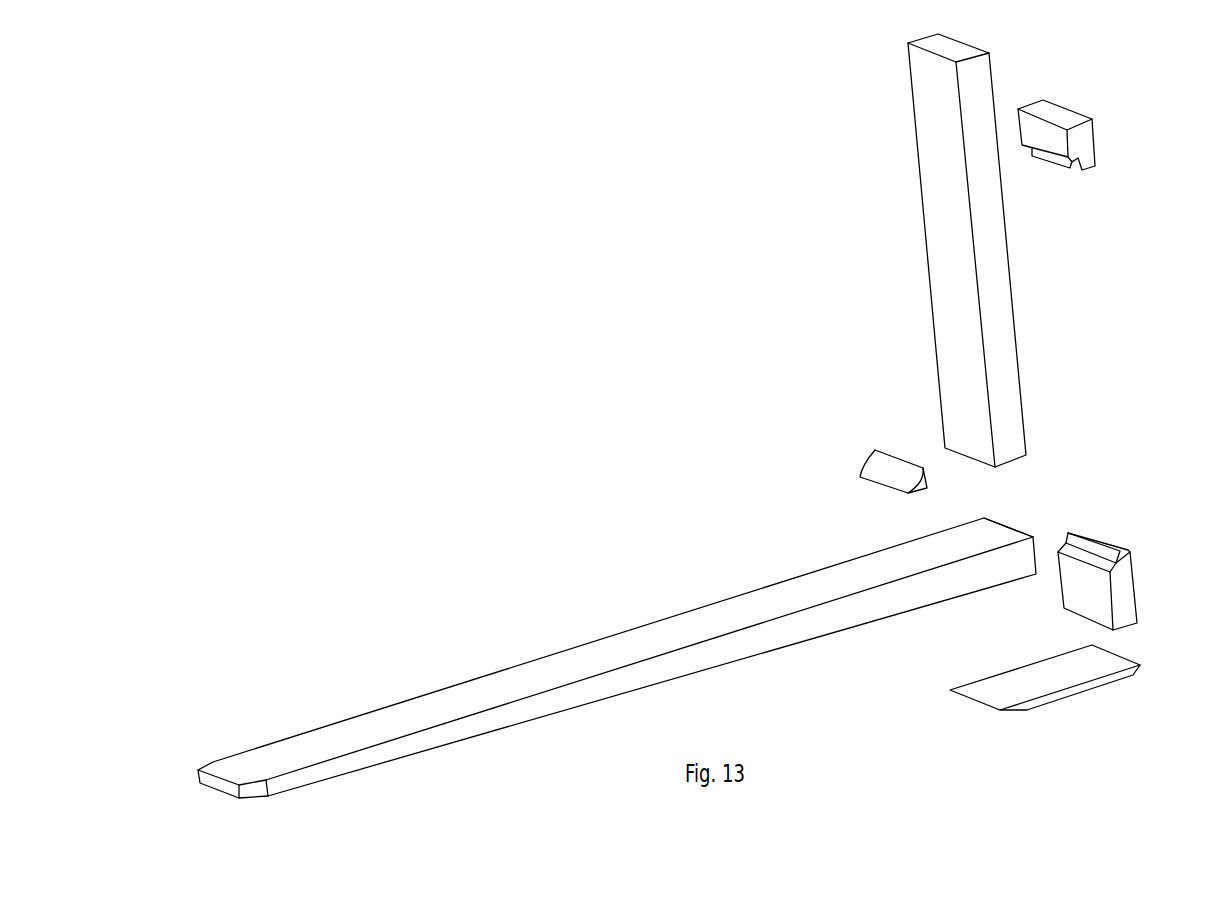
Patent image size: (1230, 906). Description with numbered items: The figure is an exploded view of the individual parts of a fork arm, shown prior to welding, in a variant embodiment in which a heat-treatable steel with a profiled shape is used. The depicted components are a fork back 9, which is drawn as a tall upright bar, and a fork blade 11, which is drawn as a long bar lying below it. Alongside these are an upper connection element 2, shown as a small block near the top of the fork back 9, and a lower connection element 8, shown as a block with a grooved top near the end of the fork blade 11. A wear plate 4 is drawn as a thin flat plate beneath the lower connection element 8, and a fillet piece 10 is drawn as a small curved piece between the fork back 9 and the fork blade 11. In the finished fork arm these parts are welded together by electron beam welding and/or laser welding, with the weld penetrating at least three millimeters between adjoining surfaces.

The fork back 9 is at (938, 101).
The upper connection element 2 is at (1082, 147).
The fillet piece 10 is at (885, 468).
The fork blade 11 is at (403, 714).
The lower connection element 8 is at (1122, 600).
The wear plate 4 is at (1030, 683).